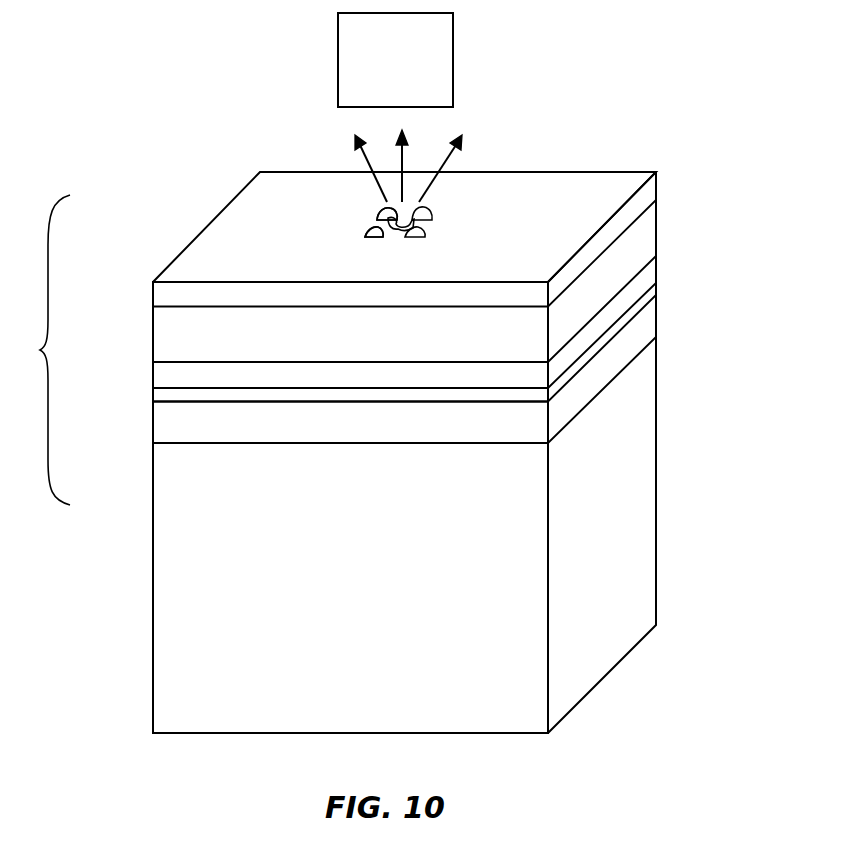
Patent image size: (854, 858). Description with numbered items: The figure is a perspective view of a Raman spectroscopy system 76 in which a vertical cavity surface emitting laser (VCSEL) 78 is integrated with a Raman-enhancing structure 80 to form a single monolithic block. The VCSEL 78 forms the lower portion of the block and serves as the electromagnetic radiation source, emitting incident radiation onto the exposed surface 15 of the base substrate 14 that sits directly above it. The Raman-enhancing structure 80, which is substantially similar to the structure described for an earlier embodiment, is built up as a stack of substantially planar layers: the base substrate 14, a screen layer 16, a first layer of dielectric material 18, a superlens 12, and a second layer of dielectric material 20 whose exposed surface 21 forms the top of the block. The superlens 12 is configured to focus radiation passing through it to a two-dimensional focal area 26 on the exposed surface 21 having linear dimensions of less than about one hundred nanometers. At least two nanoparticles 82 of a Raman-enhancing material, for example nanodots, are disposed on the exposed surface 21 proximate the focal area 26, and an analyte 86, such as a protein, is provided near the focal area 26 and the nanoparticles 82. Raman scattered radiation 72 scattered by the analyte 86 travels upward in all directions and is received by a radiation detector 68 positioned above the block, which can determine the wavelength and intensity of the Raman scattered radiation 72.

The Raman spectroscopy system 76 is at (693, 131).
The vertical cavity surface emitting laser (VCSEL) 78 is at (200, 617).
The exposed surface of the second layer of dielectric material 21 is at (170, 270).
The second layer of dielectric material 20 is at (168, 296).
The superlens 12 is at (173, 335).
The first layer of dielectric material 18 is at (165, 374).
The screen layer 16 is at (165, 393).
The base substrate 14 is at (165, 420).
The exposed surface of the base substrate 15 is at (190, 443).
The Raman-enhancing structure 80 is at (37, 350).
The radiation detector 68 is at (355, 27).
The Raman scattered radiation 72 is at (362, 157).
The two-dimensional focal area 26 is at (423, 205).
The analyte 86 is at (373, 218).
The nanoparticles 82 is at (363, 232).